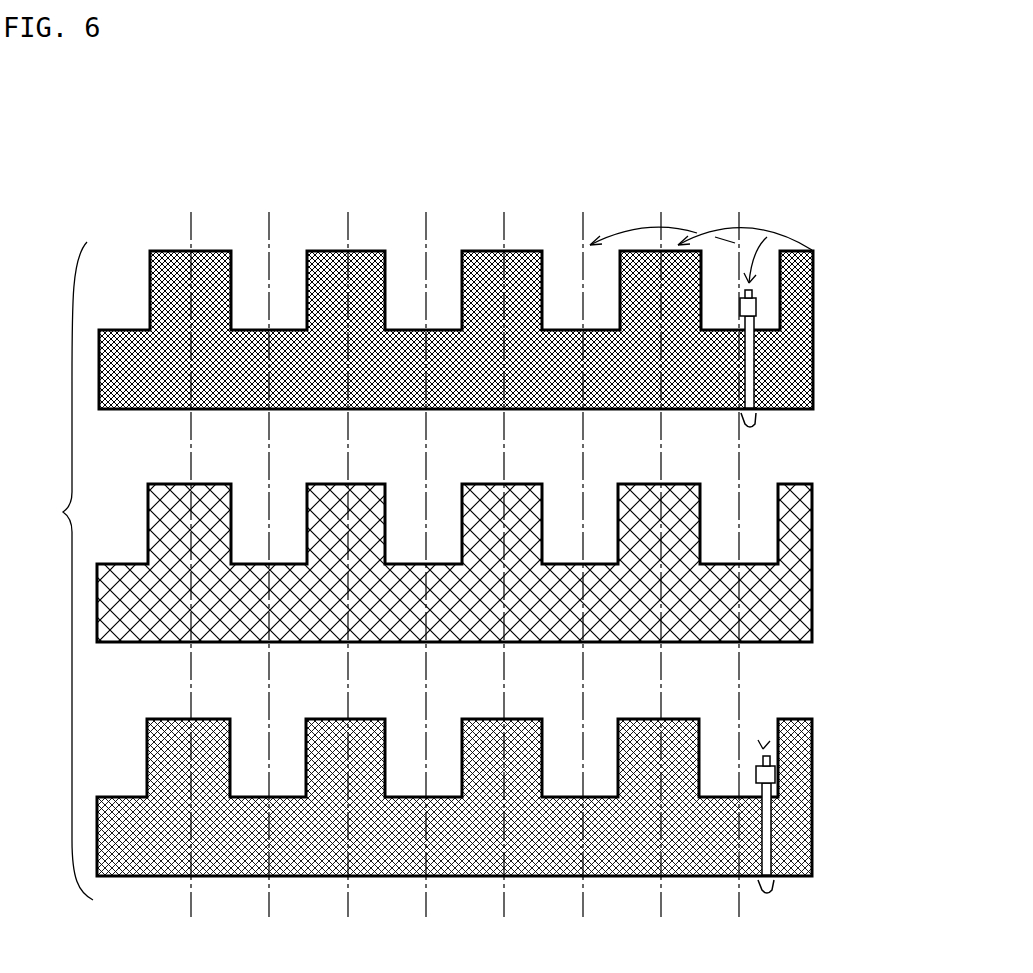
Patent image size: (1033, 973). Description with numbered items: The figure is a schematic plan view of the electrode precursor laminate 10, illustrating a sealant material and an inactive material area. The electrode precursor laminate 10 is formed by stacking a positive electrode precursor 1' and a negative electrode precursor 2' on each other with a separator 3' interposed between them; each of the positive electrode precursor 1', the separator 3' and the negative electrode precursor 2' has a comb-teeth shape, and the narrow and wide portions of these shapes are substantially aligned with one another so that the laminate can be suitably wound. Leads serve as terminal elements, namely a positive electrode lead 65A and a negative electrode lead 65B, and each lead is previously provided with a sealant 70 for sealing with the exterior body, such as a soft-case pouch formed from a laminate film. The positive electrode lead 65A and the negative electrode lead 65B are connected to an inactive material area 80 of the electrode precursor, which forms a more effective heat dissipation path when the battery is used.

The electrode precursor laminate 10 is at (61, 571).
The positive electrode precursor 1' is at (456, 330).
The separator 3' is at (454, 563).
The negative electrode precursor 2' is at (454, 797).
The positive electrode lead 65A is at (773, 227).
The negative electrode lead 65B is at (764, 747).
The sealant 70 is at (757, 306).
The inactive material area 80 is at (753, 430).